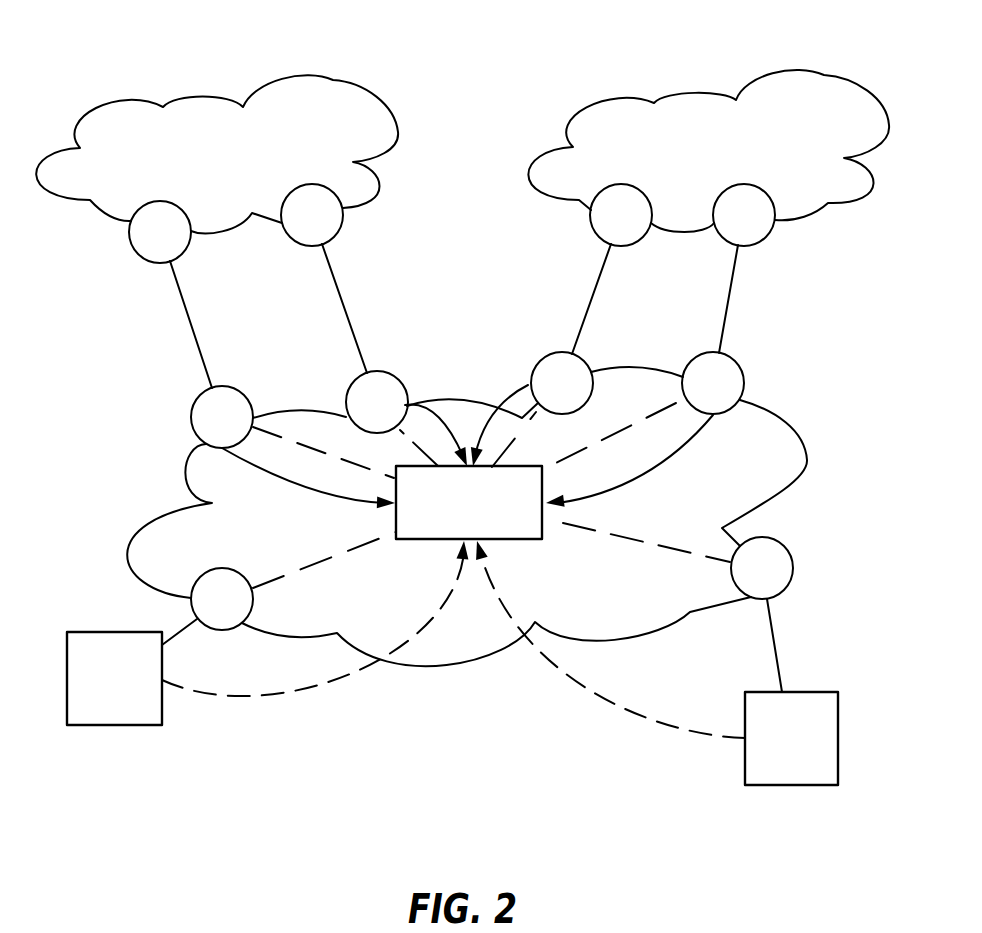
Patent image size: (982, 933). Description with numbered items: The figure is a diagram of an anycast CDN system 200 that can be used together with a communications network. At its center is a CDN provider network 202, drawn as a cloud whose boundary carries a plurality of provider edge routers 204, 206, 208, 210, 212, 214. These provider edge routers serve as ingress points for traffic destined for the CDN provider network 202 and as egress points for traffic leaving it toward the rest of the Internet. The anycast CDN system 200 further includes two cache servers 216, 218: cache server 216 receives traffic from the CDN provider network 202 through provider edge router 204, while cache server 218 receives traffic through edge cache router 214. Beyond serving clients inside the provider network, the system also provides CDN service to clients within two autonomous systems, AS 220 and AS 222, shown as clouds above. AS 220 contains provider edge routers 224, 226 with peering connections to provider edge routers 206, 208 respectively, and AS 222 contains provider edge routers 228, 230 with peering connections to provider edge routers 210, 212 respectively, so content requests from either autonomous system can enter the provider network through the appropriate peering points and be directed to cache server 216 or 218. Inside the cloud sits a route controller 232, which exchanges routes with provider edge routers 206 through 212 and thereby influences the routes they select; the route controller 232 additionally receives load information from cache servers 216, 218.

The anycast CDN system 200 is at (461, 77).
The CDN provider network 202 is at (163, 516).
The provider edge router 204 is at (222, 632).
The provider edge router 206 is at (190, 415).
The provider edge router 208 is at (345, 398).
The provider edge router 210 is at (561, 353).
The provider edge router 212 is at (717, 354).
The provider edge router 214 is at (792, 563).
The cache server 216 is at (115, 726).
The cache server 218 is at (790, 786).
The AS 220 is at (213, 95).
The AS 222 is at (708, 92).
The provider edge router 224 is at (128, 234).
The provider edge router 226 is at (343, 217).
The provider edge router 228 is at (591, 217).
The provider edge router 230 is at (776, 217).
The route controller 232 is at (500, 540).